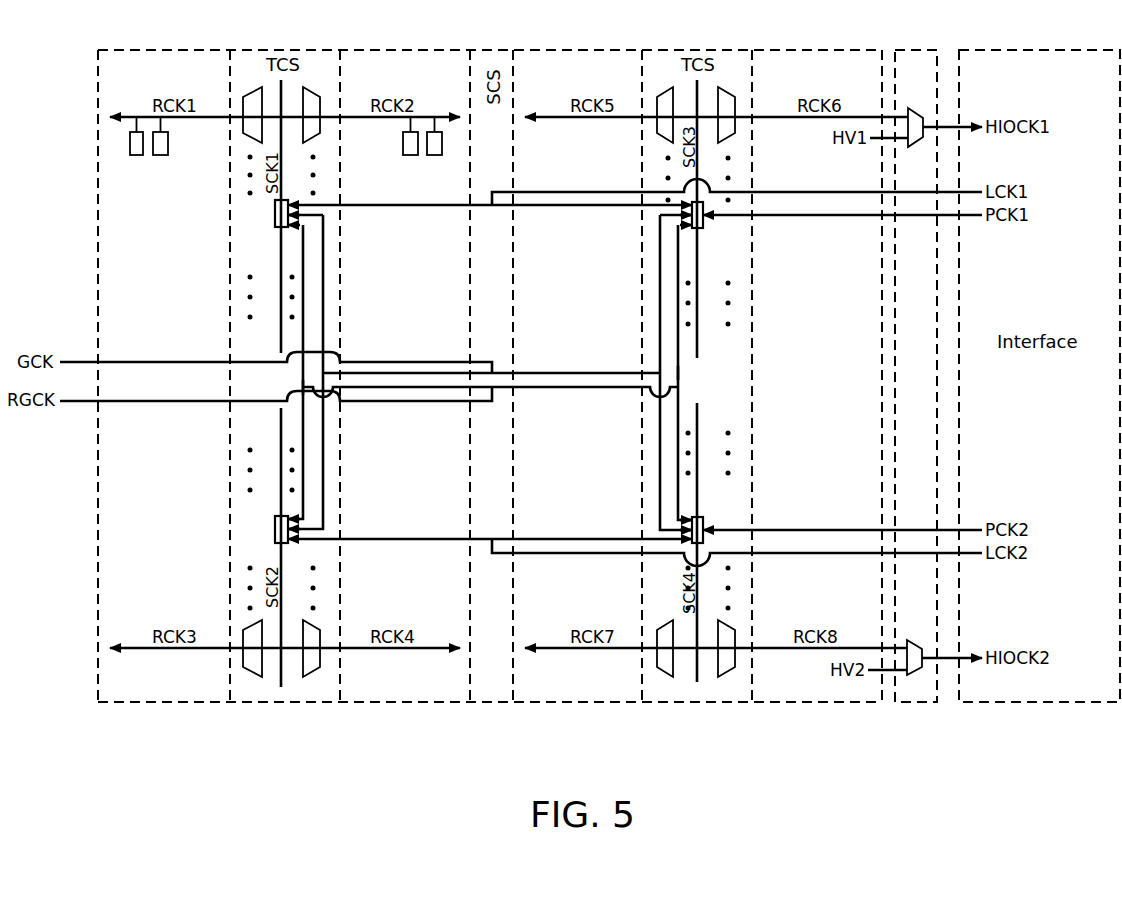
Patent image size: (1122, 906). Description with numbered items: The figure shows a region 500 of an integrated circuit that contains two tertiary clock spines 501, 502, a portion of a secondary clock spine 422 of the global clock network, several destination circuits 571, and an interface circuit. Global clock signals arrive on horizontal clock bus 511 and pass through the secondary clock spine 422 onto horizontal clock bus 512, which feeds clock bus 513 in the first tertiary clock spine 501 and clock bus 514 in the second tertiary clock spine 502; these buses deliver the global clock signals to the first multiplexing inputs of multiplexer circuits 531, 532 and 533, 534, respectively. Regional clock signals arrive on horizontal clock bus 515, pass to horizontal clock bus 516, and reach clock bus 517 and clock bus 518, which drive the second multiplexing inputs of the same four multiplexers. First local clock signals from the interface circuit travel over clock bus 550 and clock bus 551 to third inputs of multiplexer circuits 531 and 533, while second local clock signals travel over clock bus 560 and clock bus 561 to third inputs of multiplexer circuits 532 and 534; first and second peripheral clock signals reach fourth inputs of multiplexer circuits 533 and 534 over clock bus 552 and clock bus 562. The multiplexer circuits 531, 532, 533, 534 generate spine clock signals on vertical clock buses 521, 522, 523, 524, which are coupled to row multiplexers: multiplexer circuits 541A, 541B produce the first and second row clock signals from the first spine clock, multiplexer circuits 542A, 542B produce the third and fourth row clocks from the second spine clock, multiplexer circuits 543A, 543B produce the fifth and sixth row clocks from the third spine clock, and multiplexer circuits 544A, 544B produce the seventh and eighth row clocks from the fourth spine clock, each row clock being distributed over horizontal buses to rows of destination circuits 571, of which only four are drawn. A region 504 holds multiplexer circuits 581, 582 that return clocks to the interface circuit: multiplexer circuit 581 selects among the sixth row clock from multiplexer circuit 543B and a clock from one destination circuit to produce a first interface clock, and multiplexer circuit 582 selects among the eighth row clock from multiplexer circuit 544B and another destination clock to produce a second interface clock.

The region 500 is at (118, 48).
The tertiary clock spine 501 is at (342, 258).
The tertiary clock spine 502 is at (752, 305).
The region 504 is at (920, 703).
The secondary clock spine 422 is at (515, 257).
The horizontal clock bus 511 is at (178, 360).
The horizontal clock bus 512 is at (593, 372).
The clock bus 513 is at (325, 437).
The clock bus 514 is at (656, 232).
The horizontal clock bus 515 is at (190, 403).
The horizontal clock bus 516 is at (593, 390).
The clock bus 517 is at (303, 374).
The clock bus 518 is at (682, 371).
The vertical clock bus 521 is at (280, 327).
The vertical clock bus 522 is at (280, 446).
The vertical clock bus 523 is at (699, 328).
The vertical clock bus 524 is at (699, 437).
The multiplexer circuit 531 is at (275, 212).
The multiplexer circuit 532 is at (275, 522).
The multiplexer circuit 533 is at (703, 229).
The multiplexer circuit 534 is at (705, 520).
The multiplexer circuit 541A is at (243, 143).
The multiplexer circuit 541B is at (322, 143).
The multiplexer circuit 542A is at (243, 672).
The multiplexer circuit 542B is at (322, 672).
The multiplexer circuit 543A is at (657, 139).
The multiplexer circuit 543B is at (736, 140).
The multiplexer circuit 544A is at (657, 672).
The multiplexer circuit 544B is at (736, 672).
The clock bus 550 is at (803, 190).
The clock bus 551 is at (433, 210).
The clock bus 552 is at (805, 217).
The clock bus 560 is at (785, 555).
The clock bus 561 is at (423, 537).
The clock bus 562 is at (785, 530).
The destination circuits 571 is at (440, 175).
The multiplexer circuit 581 is at (921, 108).
The multiplexer circuit 582 is at (921, 640).